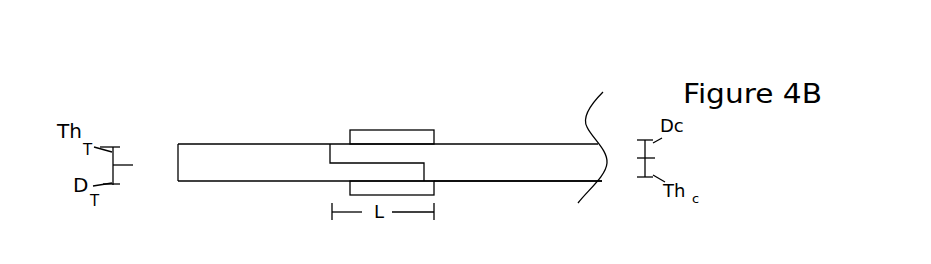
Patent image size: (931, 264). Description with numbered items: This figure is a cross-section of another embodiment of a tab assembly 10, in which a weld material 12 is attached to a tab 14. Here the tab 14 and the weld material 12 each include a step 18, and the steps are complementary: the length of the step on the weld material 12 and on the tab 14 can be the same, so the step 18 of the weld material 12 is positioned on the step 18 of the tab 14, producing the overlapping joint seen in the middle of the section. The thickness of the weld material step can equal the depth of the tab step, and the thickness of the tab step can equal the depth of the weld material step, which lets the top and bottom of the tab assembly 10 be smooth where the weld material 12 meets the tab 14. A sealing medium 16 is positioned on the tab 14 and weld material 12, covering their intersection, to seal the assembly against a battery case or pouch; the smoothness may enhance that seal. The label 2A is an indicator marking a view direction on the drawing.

The tab assembly 10 is at (468, 108).
The weld material 12 is at (215, 144).
The tab 14 is at (468, 182).
The sealing medium 16 is at (405, 130).
The step 18 is at (343, 163).
The section view indicator 2A is at (353, 97).